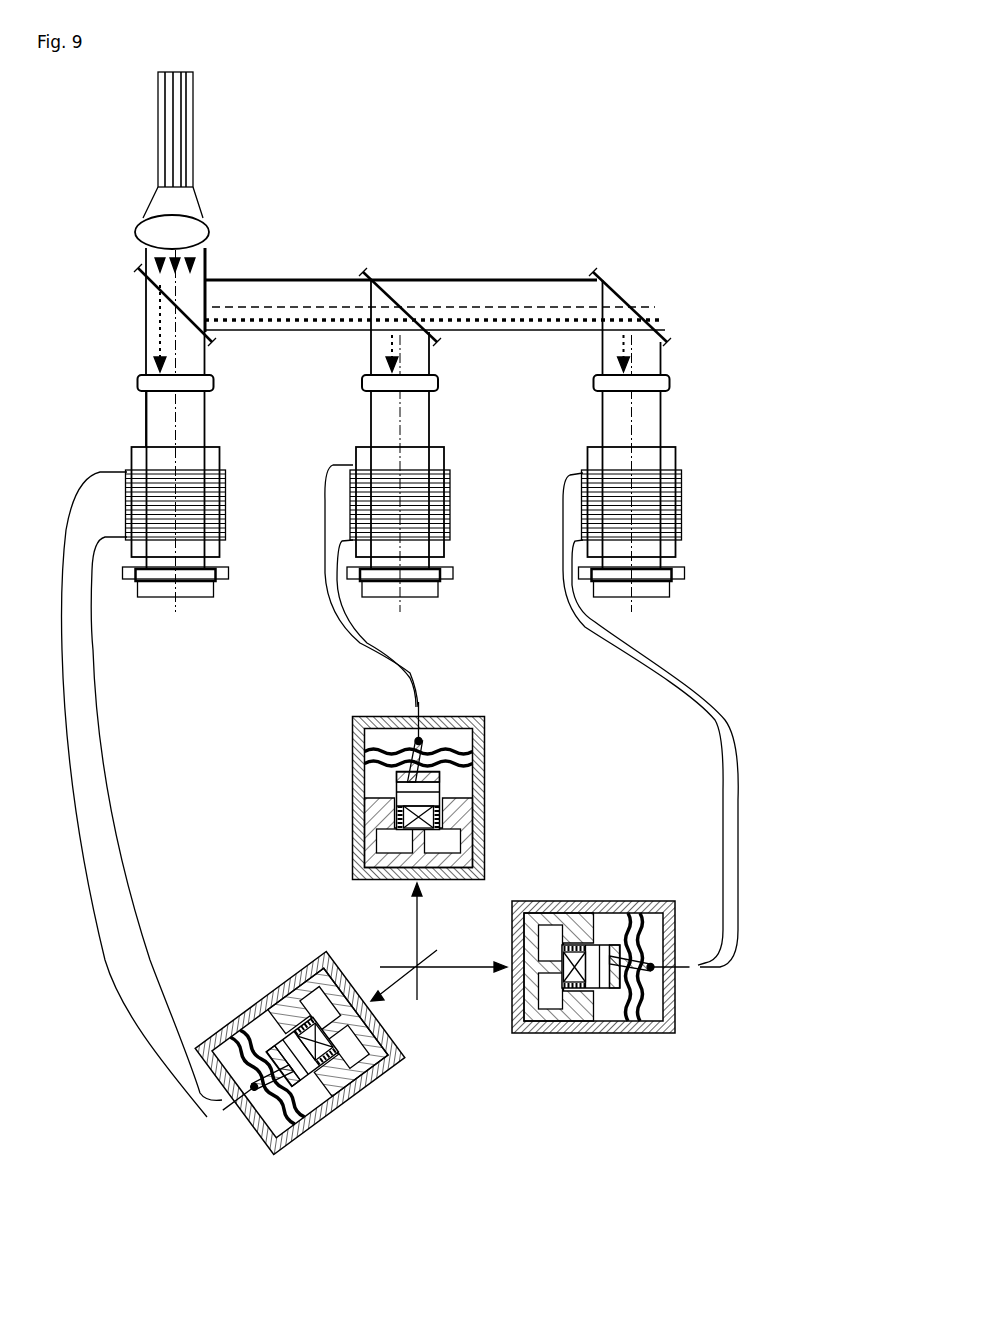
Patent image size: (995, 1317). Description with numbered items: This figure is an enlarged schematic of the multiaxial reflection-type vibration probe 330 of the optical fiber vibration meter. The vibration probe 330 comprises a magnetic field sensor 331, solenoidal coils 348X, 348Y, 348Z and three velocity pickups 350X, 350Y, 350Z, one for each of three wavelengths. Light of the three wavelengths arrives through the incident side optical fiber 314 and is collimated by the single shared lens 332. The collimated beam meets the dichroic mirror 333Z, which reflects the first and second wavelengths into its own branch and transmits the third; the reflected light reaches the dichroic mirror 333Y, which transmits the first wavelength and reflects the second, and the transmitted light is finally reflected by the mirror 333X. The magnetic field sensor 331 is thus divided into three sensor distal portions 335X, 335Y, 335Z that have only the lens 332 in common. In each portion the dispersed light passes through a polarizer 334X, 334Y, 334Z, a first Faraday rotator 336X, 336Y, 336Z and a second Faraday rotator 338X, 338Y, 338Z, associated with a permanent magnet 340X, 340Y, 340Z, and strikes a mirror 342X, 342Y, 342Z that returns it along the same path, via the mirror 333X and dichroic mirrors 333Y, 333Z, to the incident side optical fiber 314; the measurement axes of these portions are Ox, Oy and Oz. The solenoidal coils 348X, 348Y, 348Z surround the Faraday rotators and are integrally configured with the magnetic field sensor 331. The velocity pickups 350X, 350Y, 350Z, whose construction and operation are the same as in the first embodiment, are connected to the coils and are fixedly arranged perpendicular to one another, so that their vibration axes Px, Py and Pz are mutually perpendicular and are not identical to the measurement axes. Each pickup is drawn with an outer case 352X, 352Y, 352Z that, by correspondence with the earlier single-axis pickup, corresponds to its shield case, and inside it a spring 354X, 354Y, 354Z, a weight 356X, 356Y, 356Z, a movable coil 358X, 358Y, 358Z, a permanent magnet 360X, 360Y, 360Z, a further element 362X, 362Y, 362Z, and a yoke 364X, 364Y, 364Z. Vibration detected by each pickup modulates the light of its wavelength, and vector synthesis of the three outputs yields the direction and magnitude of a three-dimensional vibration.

The incident side optical fiber 314 is at (187, 156).
The vibration probe 330 is at (646, 127).
The magnetic field sensor 331 is at (342, 153).
The lens 332 is at (192, 232).
The mirror 333X is at (627, 306).
The dichroic mirror 333Y is at (397, 306).
The dichroic mirror 333Z is at (205, 323).
The polarizer 334X is at (668, 377).
The polarizer 334Y is at (435, 377).
The polarizer 334Z is at (212, 380).
The sensor distal portion 335X is at (697, 458).
The sensor distal portion 335Y is at (461, 458).
The sensor distal portion 335Z is at (230, 443).
The first Faraday rotator 336X is at (665, 507).
The first Faraday rotator 336Y is at (432, 507).
The first Faraday rotator 336Z is at (209, 507).
The second Faraday rotator 338X is at (660, 553).
The second Faraday rotator 338Y is at (428, 554).
The second Faraday rotator 338Z is at (204, 554).
The permanent magnet 340X is at (667, 574).
The permanent magnet 340Y is at (434, 574).
The permanent magnet 340Z is at (211, 574).
The mirror 342X is at (668, 594).
The mirror 342Y is at (435, 594).
The mirror 342Z is at (212, 594).
The solenoidal coil 348X is at (666, 505).
The solenoidal coil 348Y is at (433, 505).
The solenoidal coil 348Z is at (210, 505).
The velocity pickup 350X is at (650, 966).
The velocity pickup 350Y is at (473, 777).
The velocity pickup 350Z is at (320, 1057).
The housing (X) 352X is at (640, 902).
The housing (Y) 352Y is at (442, 717).
The housing (Z) 352Z is at (251, 1130).
The stylus shaft (X) 354X is at (662, 969).
The stylus shaft (Y) 354Y is at (480, 722).
The stylus shaft (Z) 354Z is at (306, 1128).
The leaf spring (X) 356X is at (623, 992).
The leaf spring (Y) 356Y is at (473, 751).
The leaf spring (Z) 356Z is at (318, 1093).
The holder (X) 358X is at (598, 994).
The holder (Y) 358Y is at (440, 796).
The holder (Z) 358Z is at (340, 1079).
The reflector (X) 360X is at (578, 1000).
The reflector (Y) 360Y is at (436, 803).
The reflector (Z) 360Z is at (363, 1062).
The drive coil (X) 362X is at (560, 1000).
The drive coil (Y) 362Y is at (446, 818).
The drive coil (Z) 362Z is at (376, 1041).
The yoke (X) 364X is at (562, 936).
The yoke (Y) 364Y is at (368, 812).
The yoke (Z) 364Z is at (306, 992).